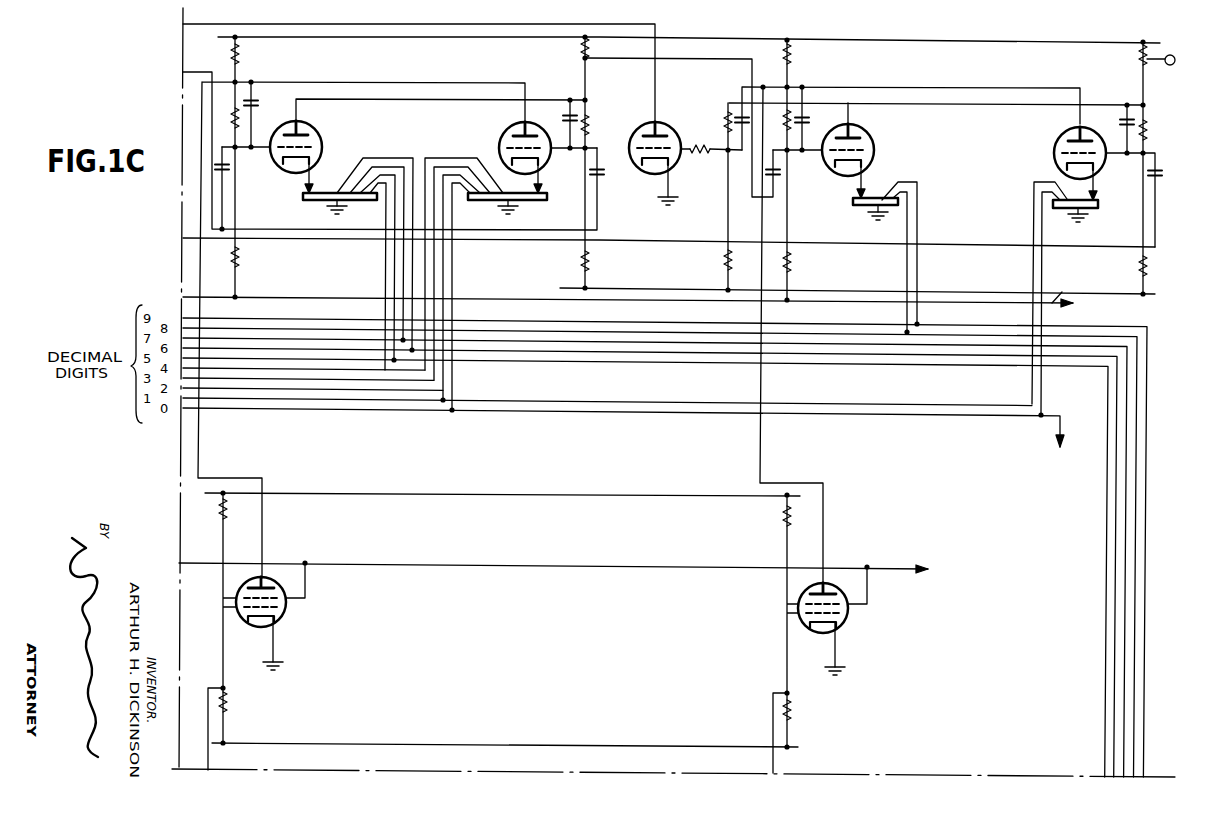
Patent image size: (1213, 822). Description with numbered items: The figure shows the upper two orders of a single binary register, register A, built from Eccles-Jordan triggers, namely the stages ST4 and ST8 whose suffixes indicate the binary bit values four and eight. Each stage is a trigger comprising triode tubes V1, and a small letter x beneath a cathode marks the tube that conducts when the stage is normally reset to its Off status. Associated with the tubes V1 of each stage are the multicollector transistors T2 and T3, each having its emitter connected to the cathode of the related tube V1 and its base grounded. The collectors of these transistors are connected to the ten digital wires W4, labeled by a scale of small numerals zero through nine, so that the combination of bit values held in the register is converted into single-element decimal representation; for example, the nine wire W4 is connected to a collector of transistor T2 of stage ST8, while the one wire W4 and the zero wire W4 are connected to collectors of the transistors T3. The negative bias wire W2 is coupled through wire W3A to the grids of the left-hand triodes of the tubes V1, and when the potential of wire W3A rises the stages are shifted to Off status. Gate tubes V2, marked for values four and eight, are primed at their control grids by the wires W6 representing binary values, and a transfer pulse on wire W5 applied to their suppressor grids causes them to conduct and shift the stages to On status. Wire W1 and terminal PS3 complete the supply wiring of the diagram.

The triode tube V1 is at (318, 130).
The gate tube V2 is at (286, 612).
The multicollector transistor T2 is at (303, 200).
The multicollector transistor T3 is at (547, 202).
The stage ST4 is at (434, 145).
The stage ST8 is at (990, 150).
The wire W1 is at (1017, 43).
The negative bias wire W2 is at (857, 292).
The wire W3A is at (530, 297).
The digital wire W4 is at (297, 316).
The wire W5 is at (587, 563).
The wire W6 is at (208, 697).
The power supply terminal PS3 is at (1189, 48).